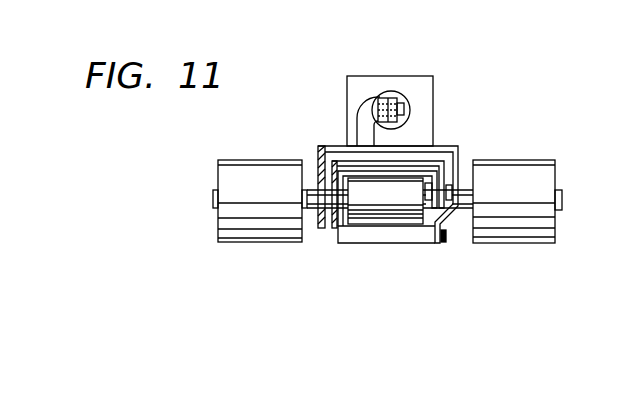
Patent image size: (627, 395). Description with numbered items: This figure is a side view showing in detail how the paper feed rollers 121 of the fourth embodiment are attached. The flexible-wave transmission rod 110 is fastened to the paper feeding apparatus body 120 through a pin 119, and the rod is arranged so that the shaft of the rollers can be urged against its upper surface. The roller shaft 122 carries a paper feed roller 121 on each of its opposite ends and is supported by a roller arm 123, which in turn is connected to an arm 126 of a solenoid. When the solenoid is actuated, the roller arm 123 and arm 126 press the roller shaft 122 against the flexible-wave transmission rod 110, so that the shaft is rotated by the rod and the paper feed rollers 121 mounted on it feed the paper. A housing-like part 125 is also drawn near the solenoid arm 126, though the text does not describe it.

The flexible-wave transmission rod 110 is at (378, 243).
The pin 119 is at (447, 233).
The paper feeding apparatus body 120 is at (462, 152).
The paper feed roller 121 is at (247, 173).
The roller shaft 122 is at (372, 216).
The roller arm 123 is at (430, 160).
The housing box 125 is at (408, 76).
The arm 126 is at (362, 117).